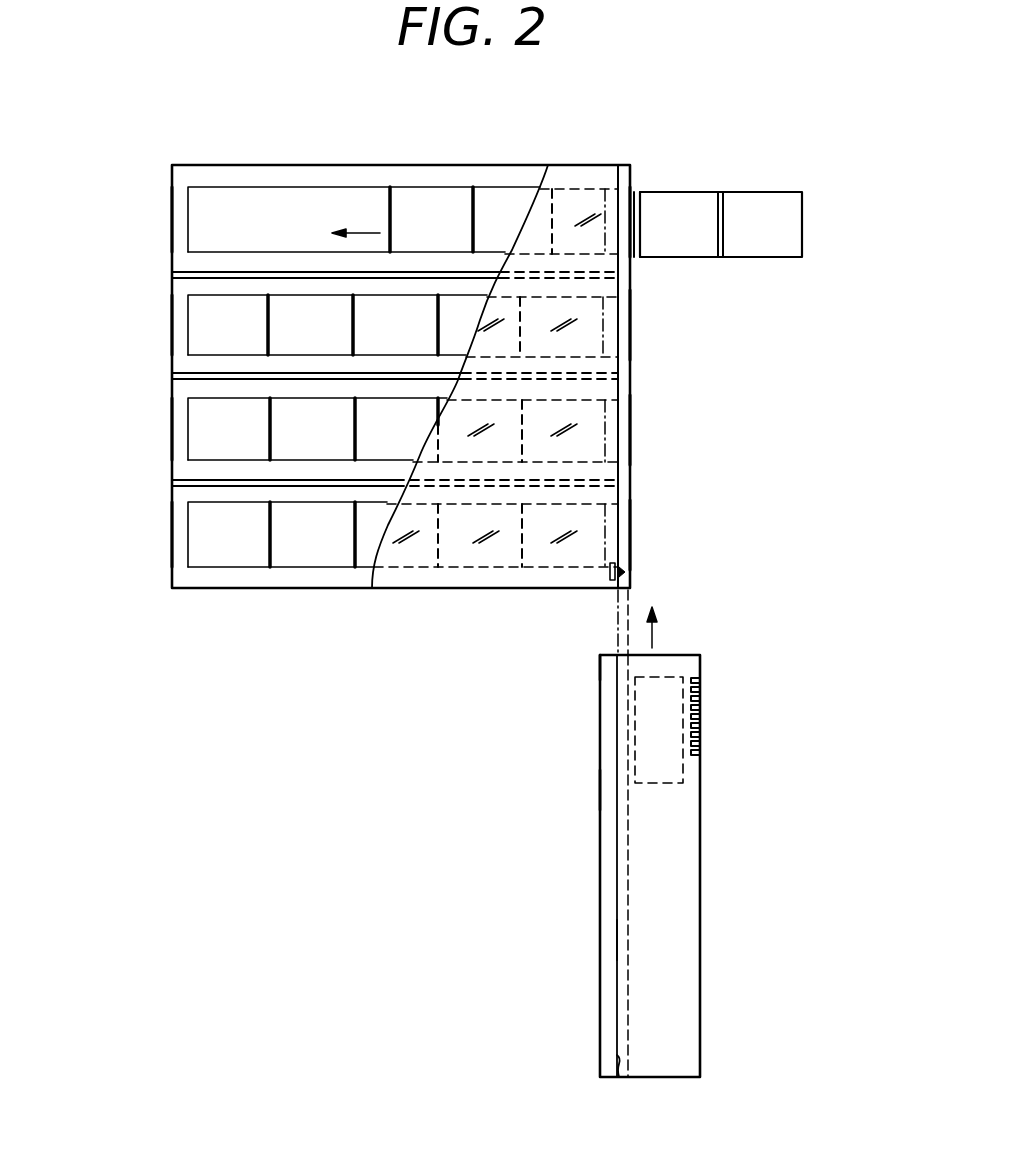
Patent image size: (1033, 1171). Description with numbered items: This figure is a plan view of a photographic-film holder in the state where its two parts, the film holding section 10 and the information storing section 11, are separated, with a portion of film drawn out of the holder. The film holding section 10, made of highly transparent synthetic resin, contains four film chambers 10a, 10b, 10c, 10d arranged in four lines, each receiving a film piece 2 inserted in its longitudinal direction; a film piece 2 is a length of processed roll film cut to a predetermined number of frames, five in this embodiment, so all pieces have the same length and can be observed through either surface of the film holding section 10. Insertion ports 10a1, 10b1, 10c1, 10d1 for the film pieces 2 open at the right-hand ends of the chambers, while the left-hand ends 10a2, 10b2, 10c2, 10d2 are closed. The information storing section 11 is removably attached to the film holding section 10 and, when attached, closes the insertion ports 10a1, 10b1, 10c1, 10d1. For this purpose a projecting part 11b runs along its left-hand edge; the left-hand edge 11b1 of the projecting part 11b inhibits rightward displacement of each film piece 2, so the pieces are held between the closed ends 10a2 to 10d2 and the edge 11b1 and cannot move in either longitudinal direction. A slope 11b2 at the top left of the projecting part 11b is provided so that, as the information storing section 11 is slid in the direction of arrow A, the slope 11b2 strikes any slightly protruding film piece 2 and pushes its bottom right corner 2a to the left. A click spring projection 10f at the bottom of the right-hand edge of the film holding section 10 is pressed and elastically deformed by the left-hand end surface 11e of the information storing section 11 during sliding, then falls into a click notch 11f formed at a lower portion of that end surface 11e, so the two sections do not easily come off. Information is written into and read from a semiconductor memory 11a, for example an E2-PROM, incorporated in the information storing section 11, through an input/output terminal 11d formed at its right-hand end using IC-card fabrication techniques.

The film piece 2 is at (390, 213).
The bottom right corner of film piece 2a is at (803, 258).
The film holding section 10 is at (600, 165).
The film chamber 10a is at (503, 188).
The film chamber 10b is at (404, 296).
The film chamber 10c is at (306, 398).
The film chamber 10d is at (316, 567).
The insertion port 10a1 is at (637, 222).
The insertion port 10b1 is at (633, 323).
The insertion port 10c1 is at (633, 428).
The insertion port 10d1 is at (633, 535).
The left-hand end of film chamber 10a2 is at (188, 207).
The left-hand end of film chamber 10b2 is at (188, 312).
The left-hand end of film chamber 10c2 is at (188, 414).
The left-hand end of film chamber 10d2 is at (188, 520).
The click spring projection 10f is at (628, 575).
The information storing section 11 is at (700, 662).
The semiconductor memory 11a is at (680, 768).
The projecting part 11b is at (614, 698).
The left-hand edge of projecting part 11b1 is at (600, 790).
The slope 11b2 is at (617, 657).
The input/output terminal 11d is at (711, 677).
The left-hand end surface 11e is at (625, 938).
The click notch 11f is at (617, 1062).